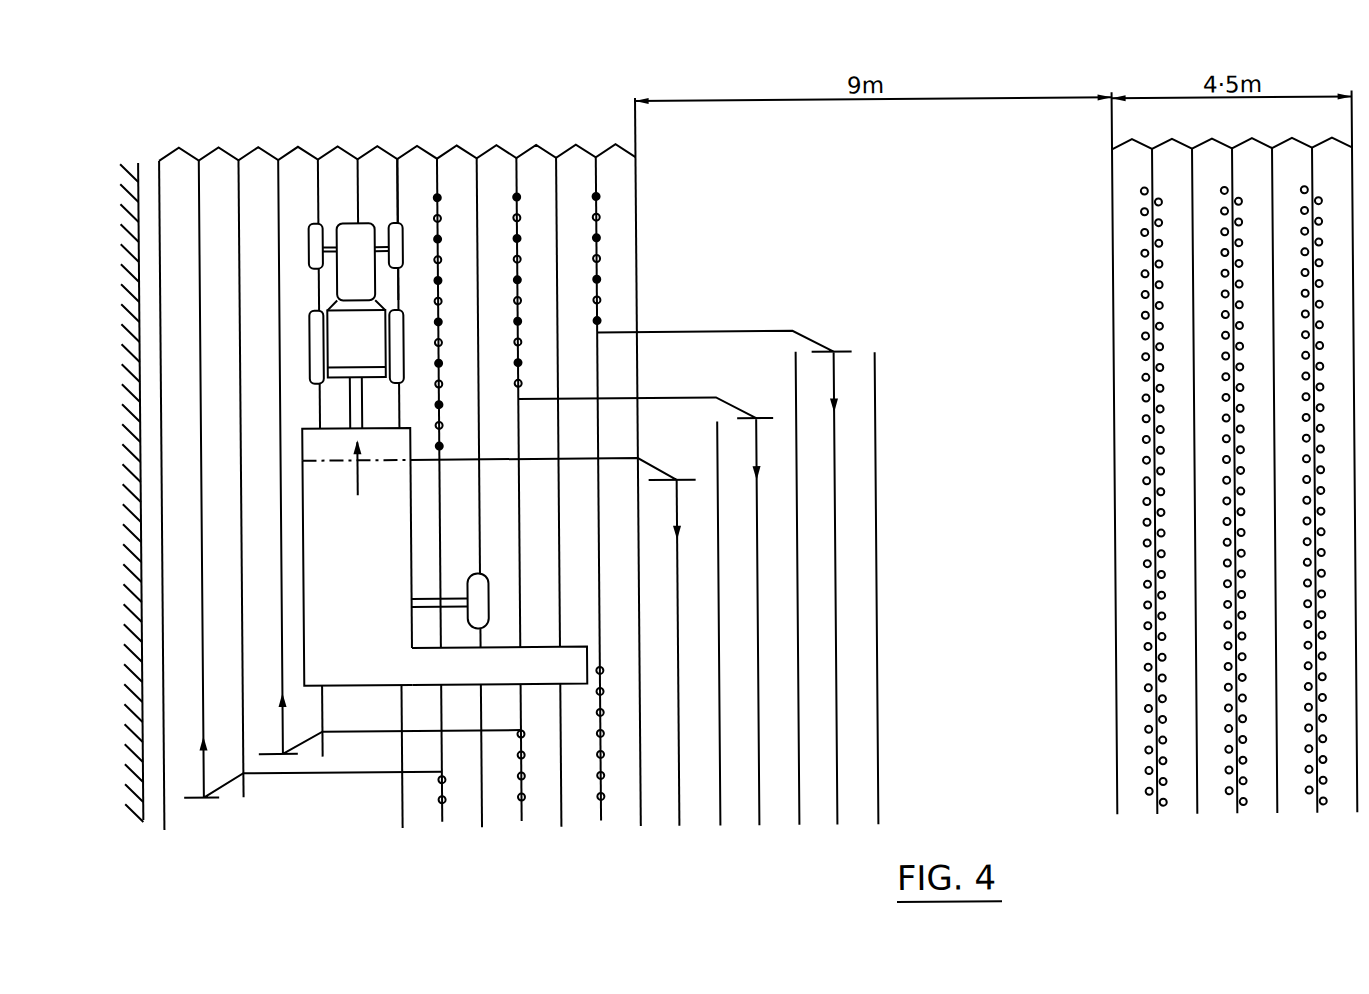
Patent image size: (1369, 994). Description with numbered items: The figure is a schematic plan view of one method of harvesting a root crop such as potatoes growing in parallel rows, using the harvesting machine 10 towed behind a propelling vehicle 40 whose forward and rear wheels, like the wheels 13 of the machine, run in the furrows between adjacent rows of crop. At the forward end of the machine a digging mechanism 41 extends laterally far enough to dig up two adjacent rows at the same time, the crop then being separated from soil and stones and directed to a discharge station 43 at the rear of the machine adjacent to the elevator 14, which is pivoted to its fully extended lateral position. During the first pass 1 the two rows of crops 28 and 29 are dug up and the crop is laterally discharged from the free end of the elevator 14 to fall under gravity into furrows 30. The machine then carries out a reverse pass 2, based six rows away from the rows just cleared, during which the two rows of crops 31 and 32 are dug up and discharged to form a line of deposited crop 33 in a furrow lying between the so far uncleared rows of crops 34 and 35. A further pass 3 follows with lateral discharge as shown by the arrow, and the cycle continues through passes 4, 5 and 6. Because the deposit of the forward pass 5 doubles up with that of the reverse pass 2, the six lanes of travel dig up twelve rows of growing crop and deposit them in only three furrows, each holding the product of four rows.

The first pass 1 is at (355, 481).
The reverse pass 2 is at (553, 500).
The further pass 3 is at (385, 456).
The fourth pass 4 is at (647, 612).
The fifth pass 5 is at (307, 478).
The sixth pass 6 is at (726, 578).
The harvesting machine 10 is at (415, 543).
The wheels 13 is at (478, 600).
The elevator 14 is at (488, 678).
The row of crops 28 is at (338, 172).
The row of crops 29 is at (378, 175).
The furrows 30 is at (594, 822).
The row of crops 31 is at (653, 822).
The row of crops 32 is at (694, 822).
The line of deposited crop 33 is at (438, 200).
The uncleared row of crops 34 is at (420, 170).
The uncleared row of crops 35 is at (468, 163).
The propelling vehicle 40 is at (355, 320).
The digging mechanism 41 is at (317, 447).
The discharge station 43 is at (336, 672).